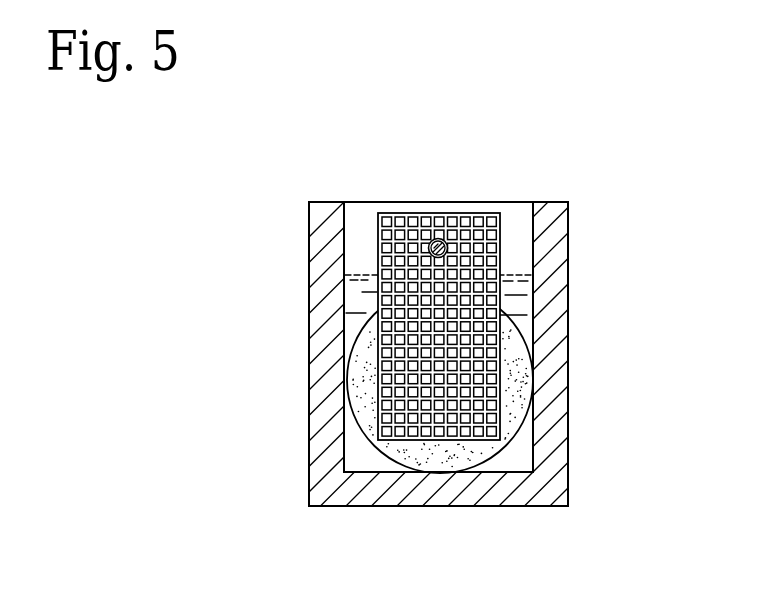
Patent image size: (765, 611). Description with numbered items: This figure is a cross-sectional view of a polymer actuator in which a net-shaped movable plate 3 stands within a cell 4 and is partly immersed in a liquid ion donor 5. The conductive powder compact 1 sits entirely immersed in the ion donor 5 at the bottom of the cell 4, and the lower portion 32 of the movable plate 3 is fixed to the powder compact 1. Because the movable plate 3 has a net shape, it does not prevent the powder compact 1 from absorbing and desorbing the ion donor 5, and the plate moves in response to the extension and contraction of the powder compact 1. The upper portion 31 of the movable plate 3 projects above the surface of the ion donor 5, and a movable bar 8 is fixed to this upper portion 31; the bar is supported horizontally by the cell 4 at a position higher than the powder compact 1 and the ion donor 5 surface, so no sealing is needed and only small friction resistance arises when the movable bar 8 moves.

The conductive powder compact 1 is at (435, 450).
The movable plate 3 is at (477, 213).
The cell 4 is at (322, 299).
The ion donor 5 is at (360, 275).
The movable bar 8 is at (438, 238).
The upper portion 31 is at (495, 236).
The lower portion 32 is at (494, 339).